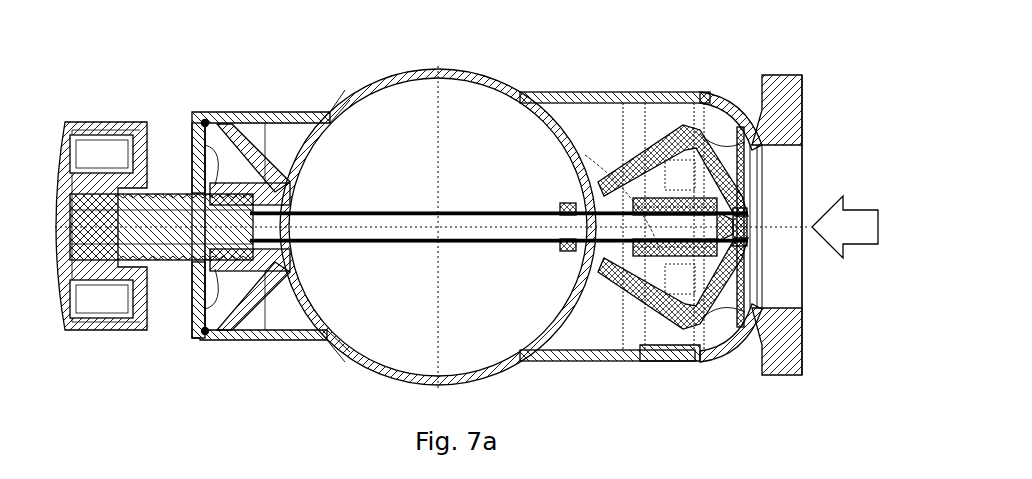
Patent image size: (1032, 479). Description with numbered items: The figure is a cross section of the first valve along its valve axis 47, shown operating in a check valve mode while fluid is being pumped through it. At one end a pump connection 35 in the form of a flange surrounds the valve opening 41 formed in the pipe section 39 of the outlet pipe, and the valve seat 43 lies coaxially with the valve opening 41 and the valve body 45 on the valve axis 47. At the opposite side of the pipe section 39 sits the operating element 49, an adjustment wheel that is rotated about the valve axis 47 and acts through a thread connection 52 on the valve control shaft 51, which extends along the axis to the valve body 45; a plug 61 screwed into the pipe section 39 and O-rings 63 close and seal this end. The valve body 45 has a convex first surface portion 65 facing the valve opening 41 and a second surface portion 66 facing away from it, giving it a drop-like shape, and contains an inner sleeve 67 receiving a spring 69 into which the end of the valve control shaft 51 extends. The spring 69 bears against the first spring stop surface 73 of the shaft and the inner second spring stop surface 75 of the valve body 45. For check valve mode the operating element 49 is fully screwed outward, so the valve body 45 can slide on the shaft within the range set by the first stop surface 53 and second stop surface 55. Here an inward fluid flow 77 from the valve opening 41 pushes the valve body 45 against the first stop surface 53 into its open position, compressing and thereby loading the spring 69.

The pump connection 35 is at (787, 345).
The pipe section 39 is at (400, 78).
The valve opening 41 is at (780, 188).
The valve seat 43 is at (733, 307).
The valve body 45 is at (650, 298).
The valve axis 47 is at (355, 225).
The operating element 49 is at (100, 122).
The valve control shaft 51 is at (408, 218).
The thread connection 52 is at (178, 252).
The first stop surface 53 is at (573, 205).
The second stop surface 55 is at (598, 186).
The plug 61 is at (255, 296).
The O-rings 63 is at (700, 318).
The convex first surface portion 65 is at (720, 177).
The second surface portion 66 is at (615, 177).
The inner sleeve 67 is at (657, 250).
The spring 69 is at (673, 208).
The first spring stop surface 73 is at (635, 247).
The second spring stop surface 75 is at (703, 248).
The inward fluid flow 77 is at (860, 235).